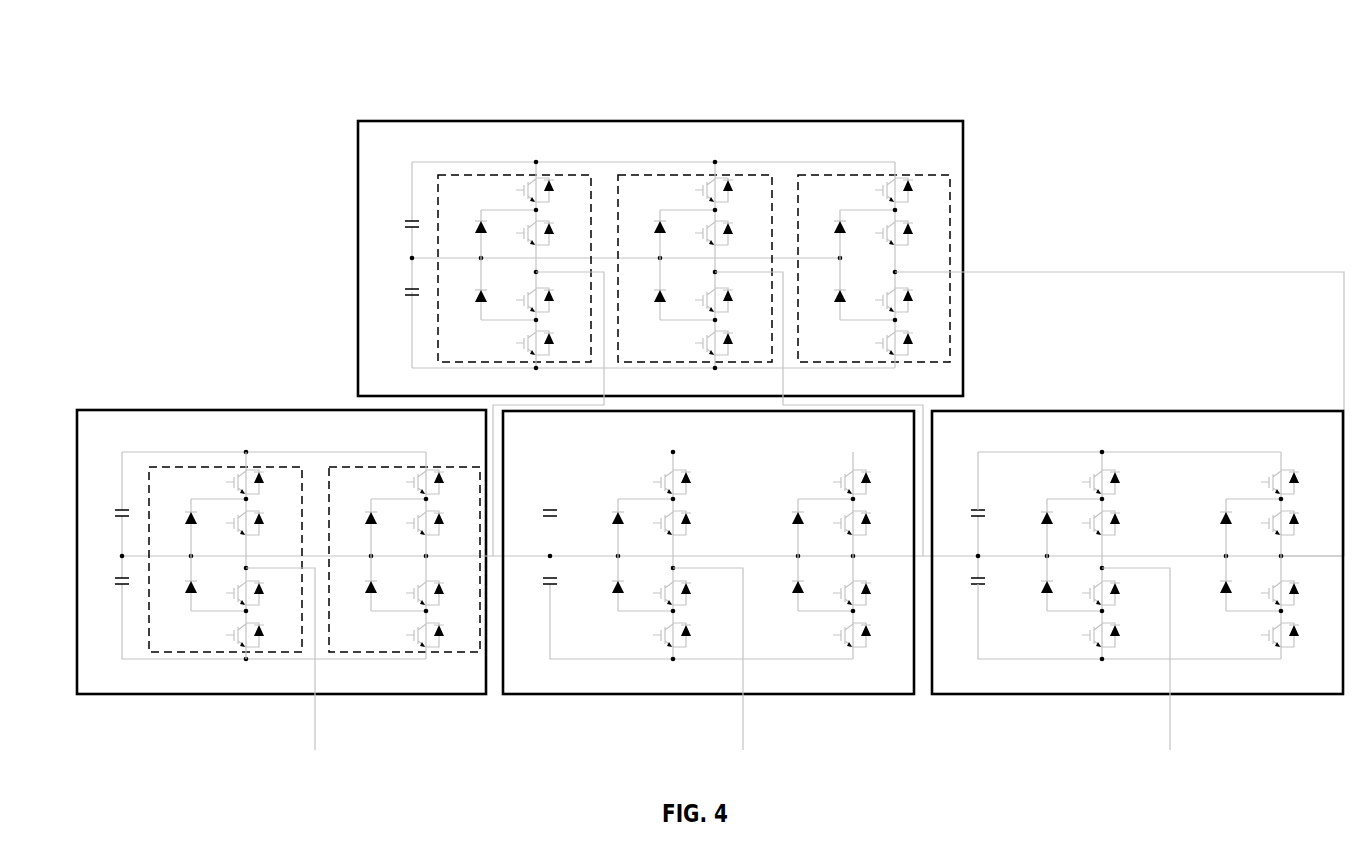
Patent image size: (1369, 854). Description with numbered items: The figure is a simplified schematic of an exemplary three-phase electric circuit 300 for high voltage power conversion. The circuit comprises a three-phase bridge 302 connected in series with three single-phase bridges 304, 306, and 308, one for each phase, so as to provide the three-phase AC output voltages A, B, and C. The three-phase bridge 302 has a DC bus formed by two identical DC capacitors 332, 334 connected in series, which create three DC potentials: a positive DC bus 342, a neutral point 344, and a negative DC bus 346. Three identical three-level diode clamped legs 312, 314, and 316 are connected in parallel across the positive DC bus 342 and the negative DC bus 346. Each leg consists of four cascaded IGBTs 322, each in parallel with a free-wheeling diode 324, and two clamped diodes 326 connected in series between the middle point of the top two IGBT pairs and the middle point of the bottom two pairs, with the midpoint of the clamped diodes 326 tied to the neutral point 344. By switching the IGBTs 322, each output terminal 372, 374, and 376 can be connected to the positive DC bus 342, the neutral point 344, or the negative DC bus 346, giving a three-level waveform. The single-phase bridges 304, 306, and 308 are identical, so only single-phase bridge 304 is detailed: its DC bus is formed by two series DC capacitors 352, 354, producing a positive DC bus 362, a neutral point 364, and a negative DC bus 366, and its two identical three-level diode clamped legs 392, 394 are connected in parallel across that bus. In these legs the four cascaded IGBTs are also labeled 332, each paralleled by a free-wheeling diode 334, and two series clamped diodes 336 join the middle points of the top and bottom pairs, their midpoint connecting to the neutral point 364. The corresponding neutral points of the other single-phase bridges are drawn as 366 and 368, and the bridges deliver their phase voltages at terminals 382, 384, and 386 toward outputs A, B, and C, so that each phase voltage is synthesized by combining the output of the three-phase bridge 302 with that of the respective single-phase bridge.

The 3-phase electric circuit 300 is at (772, 65).
The 3-phase bridge 302 is at (690, 116).
The single-phase bridge 304 is at (83, 697).
The single-phase bridge 306 is at (512, 697).
The single-phase bridge 308 is at (941, 697).
The 3-level diode clamped leg 312 is at (486, 173).
The 3-level diode clamped leg 314 is at (666, 173).
The 3-level diode clamped leg 316 is at (843, 173).
The IGBT 322 is at (694, 269).
The free-wheeling diode 324 is at (742, 268).
The clamped diode 326 is at (645, 266).
The DC capacitor 332 is at (408, 222).
The DC capacitor 334 is at (408, 291).
The clamped diode 336 is at (693, 557).
The positive DC bus 342 is at (422, 163).
The neutral point 344 is at (410, 257).
The negative DC bus 346 is at (422, 369).
The DC capacitor 352 is at (116, 512).
The DC capacitor 354 is at (116, 582).
The positive DC bus 362 is at (137, 453).
The neutral point 364 is at (120, 555).
The negative DC bus 366 is at (137, 660).
The midpoint rail of module 308 368 is at (976, 555).
The output terminal 372 is at (600, 405).
The output terminal 374 is at (898, 405).
The output terminal 376 is at (1344, 365).
The terminal 382 is at (316, 678).
The phase B output 384 is at (744, 678).
The phase C output 386 is at (1172, 678).
The 3-level diode clamped leg 392 is at (213, 466).
The 3-level diode clamped leg 394 is at (395, 466).